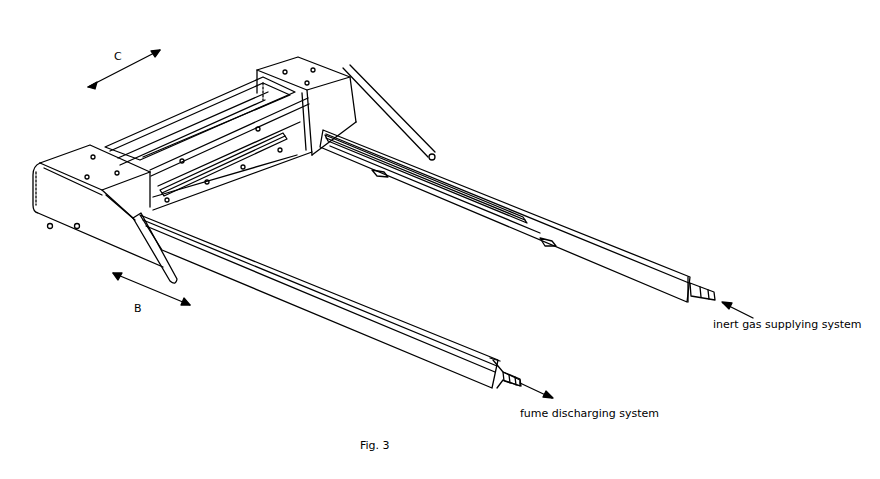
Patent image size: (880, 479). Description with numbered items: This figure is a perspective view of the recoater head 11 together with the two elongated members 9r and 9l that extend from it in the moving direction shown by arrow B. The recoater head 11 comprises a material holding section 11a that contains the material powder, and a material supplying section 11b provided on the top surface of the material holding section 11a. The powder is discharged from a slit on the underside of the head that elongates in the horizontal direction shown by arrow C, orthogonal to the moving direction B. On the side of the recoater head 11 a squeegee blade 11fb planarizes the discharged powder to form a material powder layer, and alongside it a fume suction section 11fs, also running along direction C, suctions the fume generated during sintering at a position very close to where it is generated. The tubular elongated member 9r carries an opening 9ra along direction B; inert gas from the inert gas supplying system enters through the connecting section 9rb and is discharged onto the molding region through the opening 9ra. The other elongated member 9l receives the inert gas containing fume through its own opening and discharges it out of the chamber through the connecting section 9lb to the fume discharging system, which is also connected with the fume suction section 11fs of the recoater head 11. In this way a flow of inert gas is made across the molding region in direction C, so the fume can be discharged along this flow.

The recoater head 11 is at (234, 153).
The material holding section 11a is at (147, 130).
The material supplying section 11b is at (188, 124).
The fume suction section 11fs is at (262, 147).
The squeegee blade 11fb is at (227, 188).
The elongated member 9l is at (344, 301).
The connecting section 9lb is at (510, 367).
The elongated member 9r is at (524, 216).
The opening 9ra is at (478, 205).
The connecting section 9rb is at (710, 283).